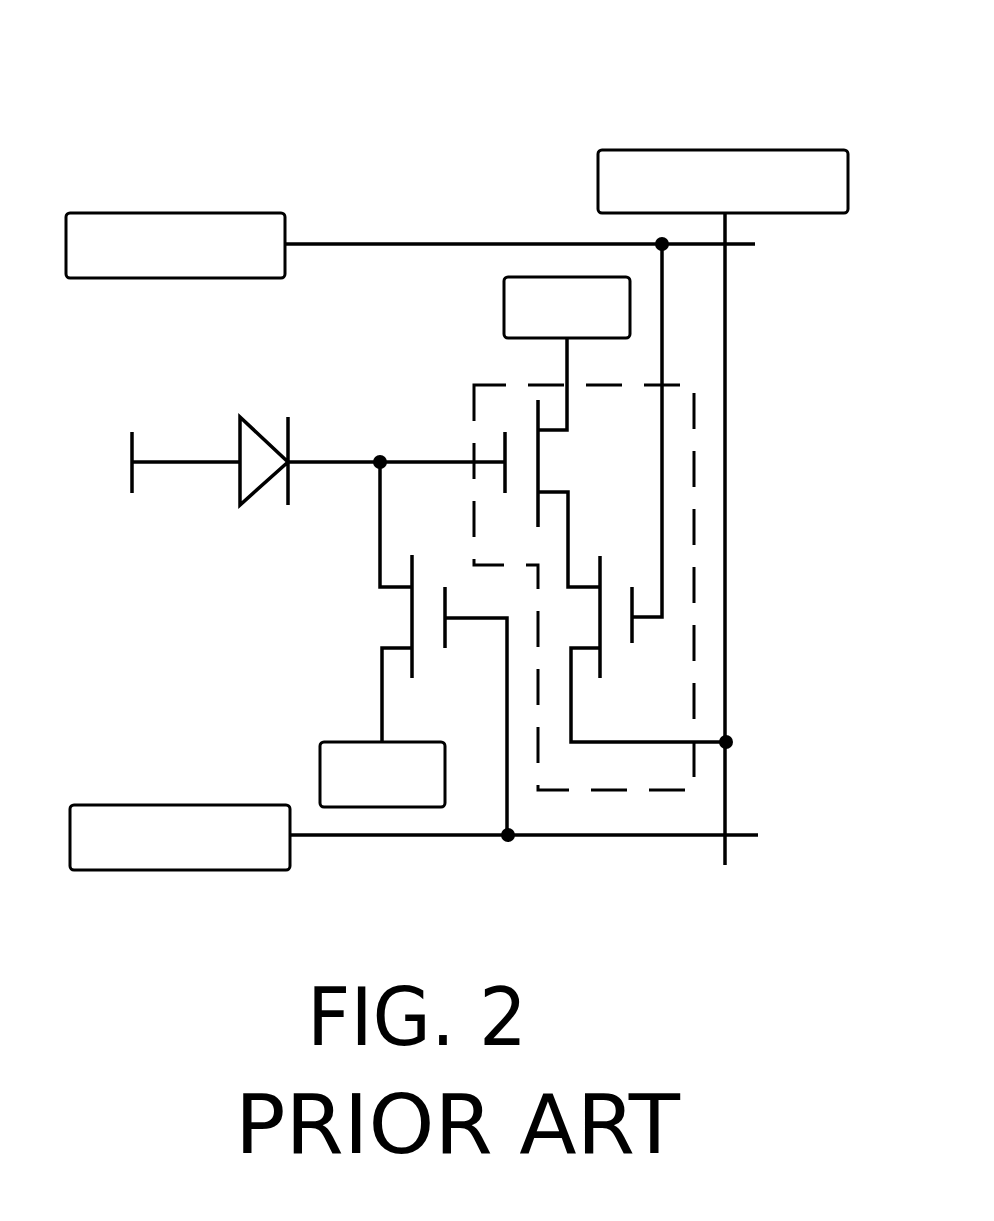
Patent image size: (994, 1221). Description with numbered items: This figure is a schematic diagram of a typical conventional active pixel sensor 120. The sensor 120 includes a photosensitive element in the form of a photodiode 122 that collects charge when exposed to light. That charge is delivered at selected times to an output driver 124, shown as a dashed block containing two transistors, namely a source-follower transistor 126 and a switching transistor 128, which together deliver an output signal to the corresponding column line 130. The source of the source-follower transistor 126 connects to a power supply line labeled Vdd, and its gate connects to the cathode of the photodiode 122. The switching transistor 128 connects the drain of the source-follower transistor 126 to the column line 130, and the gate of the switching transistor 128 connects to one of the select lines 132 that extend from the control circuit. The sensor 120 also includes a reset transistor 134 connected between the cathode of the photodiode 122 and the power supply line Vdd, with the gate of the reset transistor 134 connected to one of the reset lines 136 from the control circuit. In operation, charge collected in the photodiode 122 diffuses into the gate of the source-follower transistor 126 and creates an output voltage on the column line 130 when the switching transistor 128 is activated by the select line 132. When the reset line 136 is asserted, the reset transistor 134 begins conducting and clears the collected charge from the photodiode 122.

The active pixel sensor 120 is at (480, 70).
The photodiode 122 is at (240, 505).
The output driver 124 is at (696, 396).
The source-follower transistor 126 is at (537, 405).
The switching transistor 128 is at (632, 643).
The column line 130 is at (725, 512).
The select line 132 is at (333, 244).
The reset transistor 134 is at (382, 628).
The reset line 136 is at (653, 835).